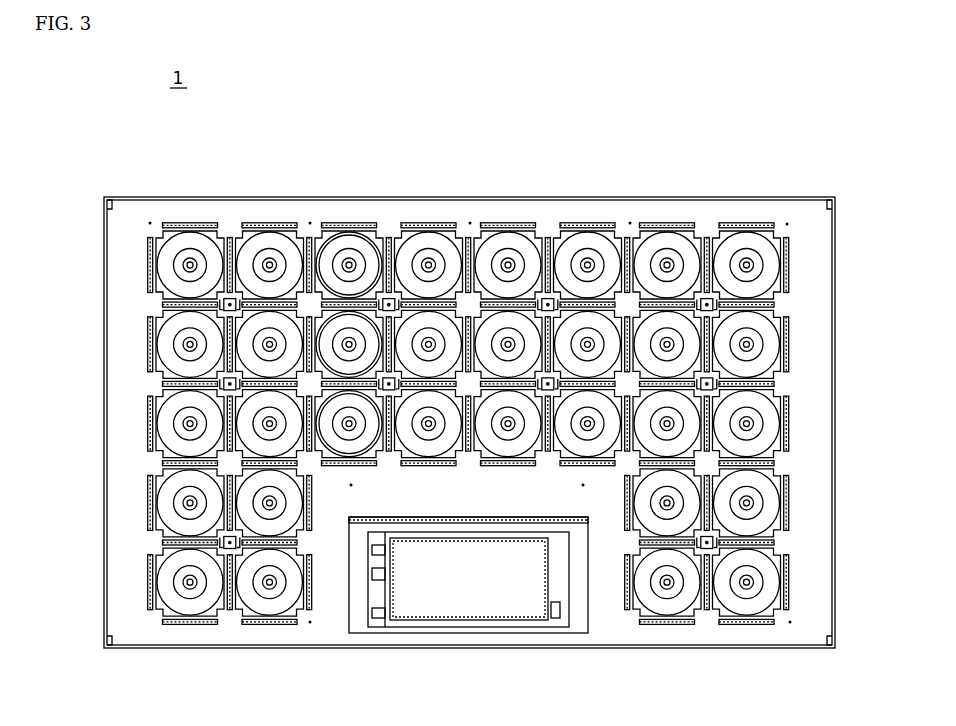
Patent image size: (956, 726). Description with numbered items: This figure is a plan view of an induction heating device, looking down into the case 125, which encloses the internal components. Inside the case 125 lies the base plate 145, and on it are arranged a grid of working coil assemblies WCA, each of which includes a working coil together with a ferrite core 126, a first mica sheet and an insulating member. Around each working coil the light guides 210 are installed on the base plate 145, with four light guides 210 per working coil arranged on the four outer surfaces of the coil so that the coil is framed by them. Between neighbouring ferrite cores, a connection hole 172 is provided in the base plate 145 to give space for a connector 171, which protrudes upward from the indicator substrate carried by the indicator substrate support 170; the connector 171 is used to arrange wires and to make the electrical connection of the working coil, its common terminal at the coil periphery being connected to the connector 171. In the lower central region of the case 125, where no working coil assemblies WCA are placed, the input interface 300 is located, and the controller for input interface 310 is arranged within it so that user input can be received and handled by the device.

The case 125 is at (270, 197).
The base plate 145 is at (327, 630).
The working coil assembly WCA is at (161, 609).
The light guide 210 is at (183, 623).
The ferrite core 126 is at (212, 615).
The indicator substrate support 170 is at (236, 556).
The connector 171 is at (223, 547).
The connection hole 172 is at (219, 533).
The input interface 300 is at (473, 596).
The controller for input interface 310 is at (381, 598).